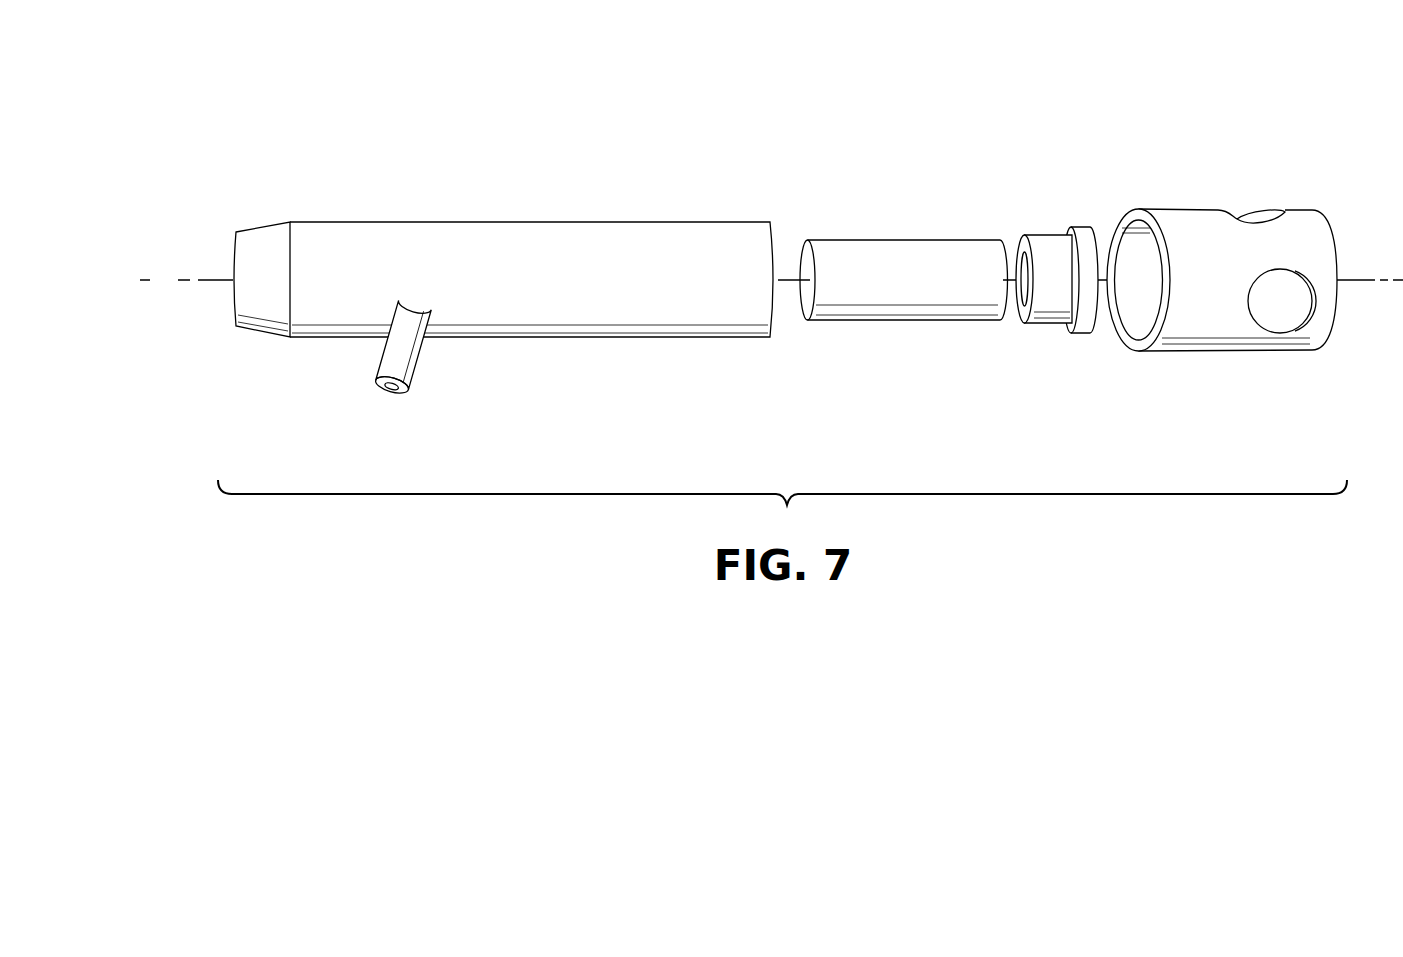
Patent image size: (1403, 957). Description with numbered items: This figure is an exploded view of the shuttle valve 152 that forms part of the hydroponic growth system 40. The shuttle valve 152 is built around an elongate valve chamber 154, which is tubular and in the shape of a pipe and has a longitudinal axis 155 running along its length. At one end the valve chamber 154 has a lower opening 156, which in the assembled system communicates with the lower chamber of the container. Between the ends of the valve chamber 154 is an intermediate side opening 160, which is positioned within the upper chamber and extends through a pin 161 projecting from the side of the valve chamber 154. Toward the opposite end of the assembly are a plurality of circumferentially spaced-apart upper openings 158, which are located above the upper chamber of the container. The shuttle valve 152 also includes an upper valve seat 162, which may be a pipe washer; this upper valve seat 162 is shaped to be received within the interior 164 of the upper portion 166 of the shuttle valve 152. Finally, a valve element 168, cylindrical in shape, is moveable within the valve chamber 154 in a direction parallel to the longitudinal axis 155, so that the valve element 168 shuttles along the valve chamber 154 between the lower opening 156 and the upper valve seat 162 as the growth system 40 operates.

The hydroponic growth system 40 is at (1351, 124).
The shuttle valve 152 is at (982, 118).
The valve chamber 154 is at (488, 237).
The longitudinal axis 155 is at (162, 279).
The lower opening 156 is at (233, 304).
The upper openings 158 is at (1275, 313).
The intermediate side opening 160 is at (392, 389).
The pin 161 is at (392, 360).
The upper valve seat 162 is at (1049, 312).
The interior 164 is at (1144, 242).
The upper portion 166 is at (1210, 280).
The valve element 168 is at (902, 303).